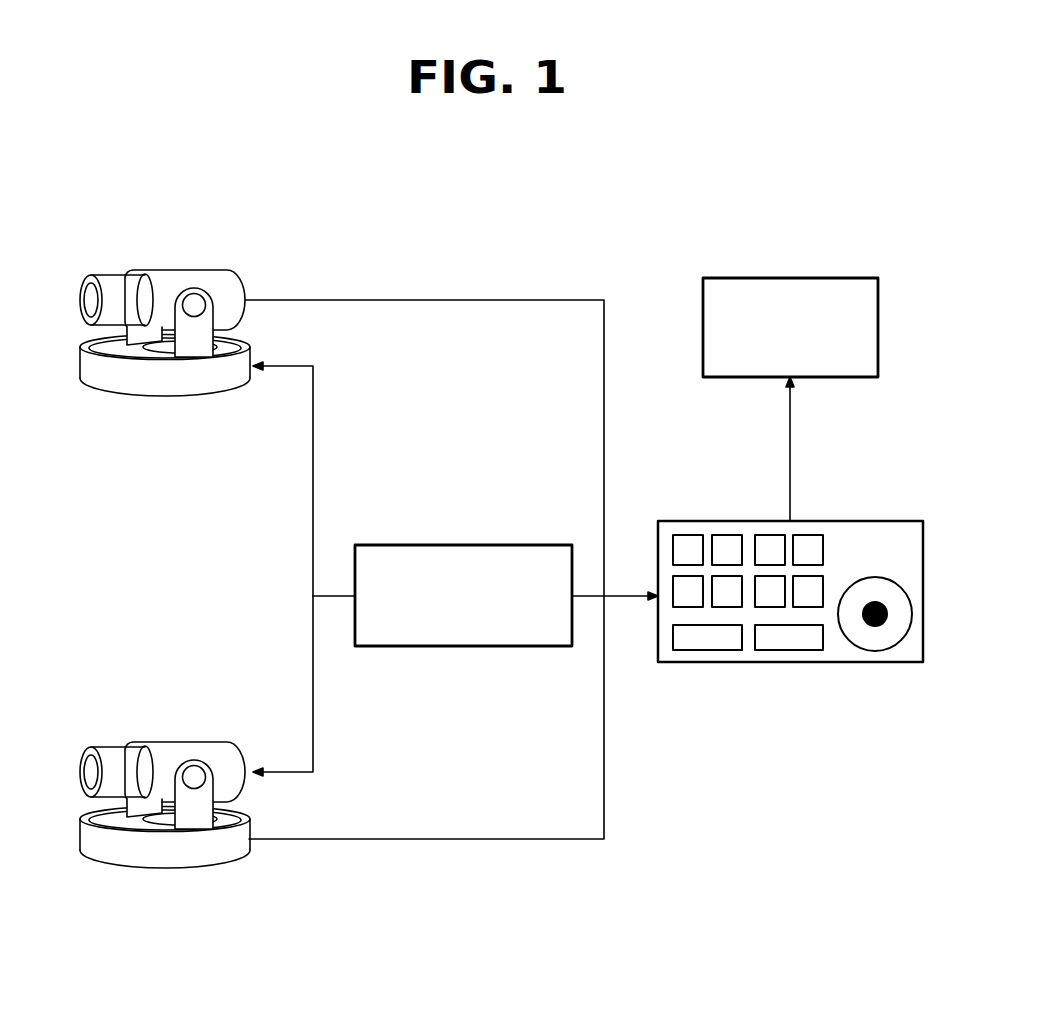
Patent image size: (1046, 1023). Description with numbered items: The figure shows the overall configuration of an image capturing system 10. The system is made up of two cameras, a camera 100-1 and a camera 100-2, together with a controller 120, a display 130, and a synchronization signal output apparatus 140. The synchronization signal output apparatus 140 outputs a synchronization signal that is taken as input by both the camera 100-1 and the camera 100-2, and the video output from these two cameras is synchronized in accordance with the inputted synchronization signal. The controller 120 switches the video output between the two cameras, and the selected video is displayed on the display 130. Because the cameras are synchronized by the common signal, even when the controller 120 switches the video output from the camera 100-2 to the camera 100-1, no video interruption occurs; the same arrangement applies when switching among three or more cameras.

The image capturing system 10 is at (517, 214).
The camera 100-1 is at (197, 269).
The camera 100-2 is at (197, 741).
The controller 120 is at (871, 521).
The display 130 is at (812, 278).
The synchronization signal output apparatus 140 is at (466, 545).